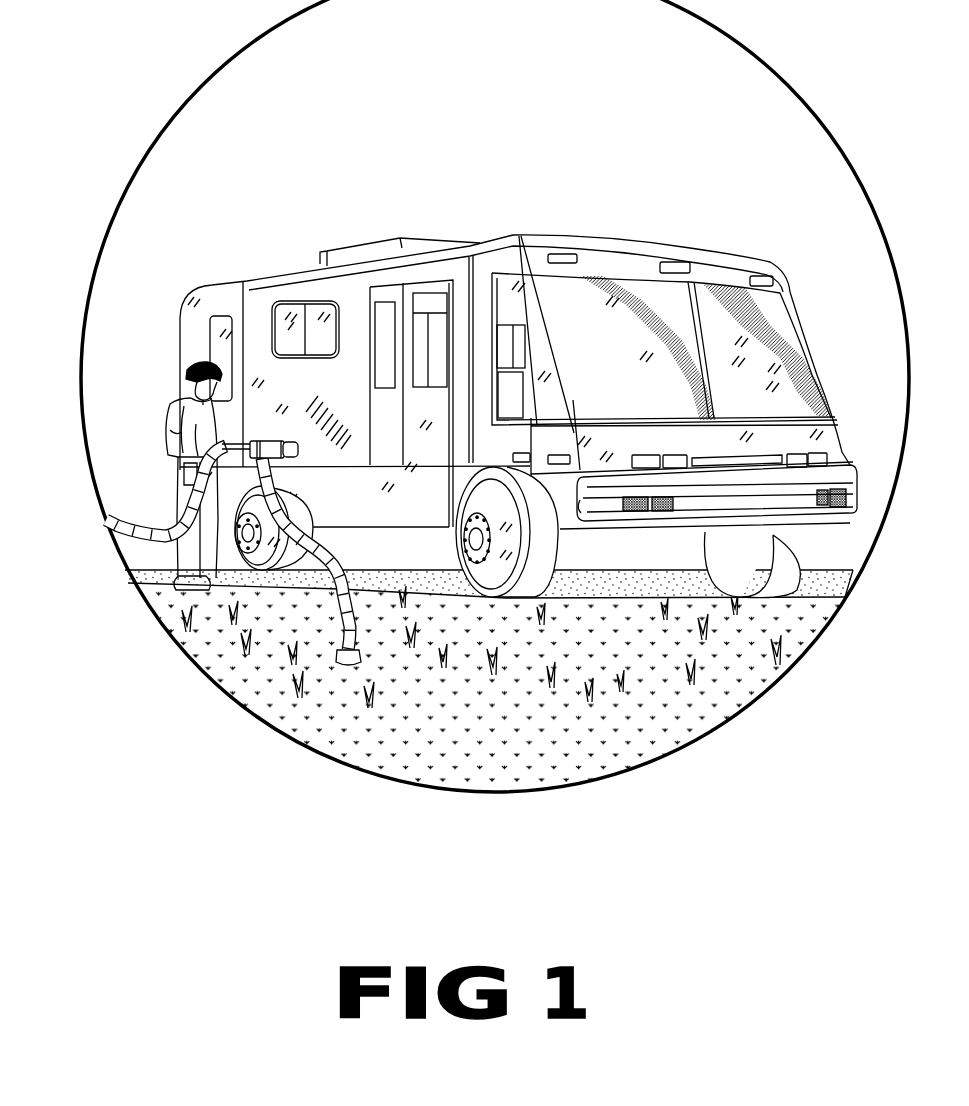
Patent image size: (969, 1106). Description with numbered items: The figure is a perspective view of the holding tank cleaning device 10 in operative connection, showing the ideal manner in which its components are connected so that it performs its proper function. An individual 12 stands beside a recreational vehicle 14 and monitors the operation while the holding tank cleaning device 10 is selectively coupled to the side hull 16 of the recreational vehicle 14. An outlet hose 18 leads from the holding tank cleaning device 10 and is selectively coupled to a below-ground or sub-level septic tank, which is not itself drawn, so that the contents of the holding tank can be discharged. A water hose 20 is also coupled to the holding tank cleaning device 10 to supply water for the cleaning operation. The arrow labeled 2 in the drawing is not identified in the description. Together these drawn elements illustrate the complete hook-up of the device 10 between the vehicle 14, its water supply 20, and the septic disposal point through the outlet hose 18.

The vacuum cleaning system 2 is at (240, 468).
The holding tank cleaning device 10 is at (291, 459).
The individual 12 is at (165, 420).
The recreational vehicle 14 is at (727, 262).
The side hull 16 is at (354, 320).
The outlet hose 18 is at (342, 662).
The water hose 20 is at (118, 527).